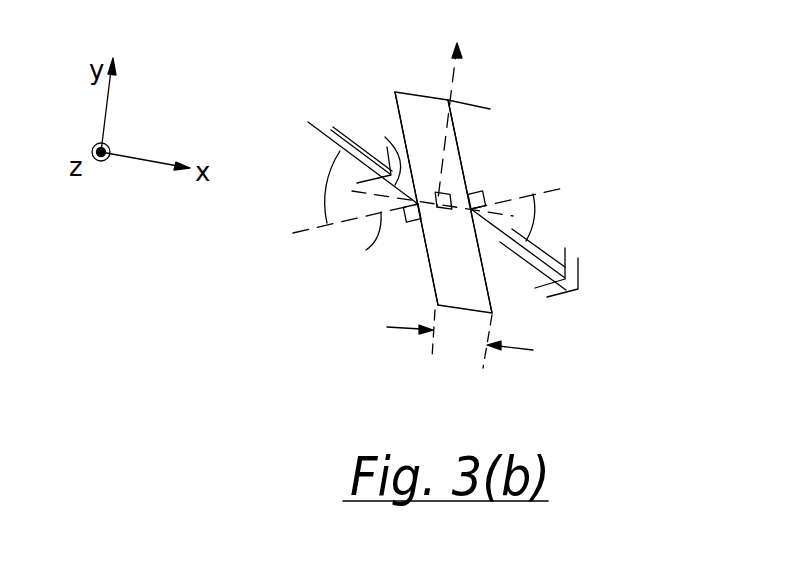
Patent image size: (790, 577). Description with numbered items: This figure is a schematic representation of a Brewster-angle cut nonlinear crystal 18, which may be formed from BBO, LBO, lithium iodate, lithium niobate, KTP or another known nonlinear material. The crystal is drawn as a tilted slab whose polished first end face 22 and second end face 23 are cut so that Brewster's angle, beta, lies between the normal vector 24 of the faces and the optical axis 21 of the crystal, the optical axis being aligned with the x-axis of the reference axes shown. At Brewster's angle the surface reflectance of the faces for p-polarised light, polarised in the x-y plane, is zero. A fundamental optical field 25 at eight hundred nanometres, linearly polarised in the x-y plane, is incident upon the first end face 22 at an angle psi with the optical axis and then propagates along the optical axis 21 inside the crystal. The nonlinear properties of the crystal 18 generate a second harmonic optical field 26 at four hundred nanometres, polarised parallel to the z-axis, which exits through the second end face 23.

The Brewster-angle cut nonlinear crystal 18 is at (372, 280).
The optical axis 21 is at (461, 193).
The first end face 22 is at (398, 114).
The second end face 23 is at (462, 143).
The normal vector 24 is at (305, 235).
The fundamental optical field 25 is at (338, 146).
The second harmonic optical field 26 is at (542, 251).